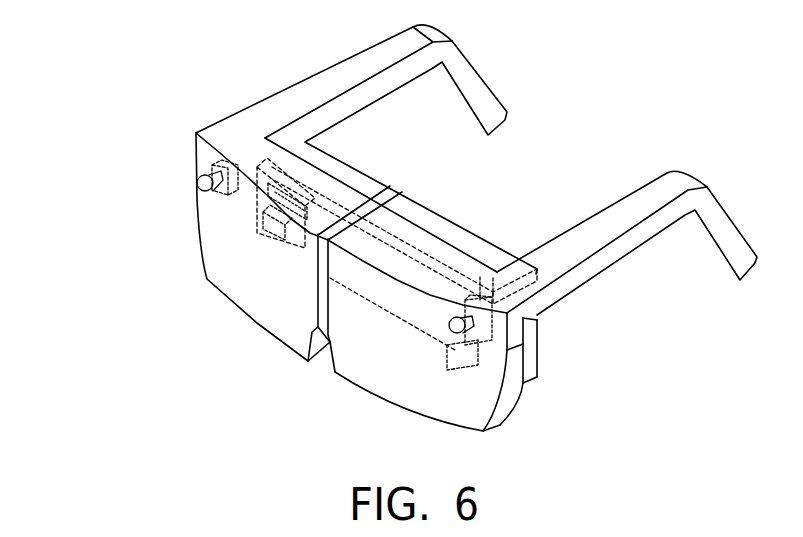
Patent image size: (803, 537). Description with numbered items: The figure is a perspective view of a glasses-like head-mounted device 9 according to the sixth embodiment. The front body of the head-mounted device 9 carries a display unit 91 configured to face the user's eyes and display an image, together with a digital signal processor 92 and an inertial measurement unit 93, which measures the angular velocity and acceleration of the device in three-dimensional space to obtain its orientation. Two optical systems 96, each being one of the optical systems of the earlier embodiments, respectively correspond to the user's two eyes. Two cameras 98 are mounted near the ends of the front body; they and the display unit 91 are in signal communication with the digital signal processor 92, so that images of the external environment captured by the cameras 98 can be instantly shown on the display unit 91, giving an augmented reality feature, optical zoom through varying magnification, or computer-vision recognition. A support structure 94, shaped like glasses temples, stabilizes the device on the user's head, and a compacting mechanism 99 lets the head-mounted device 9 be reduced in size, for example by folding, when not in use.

The head-mounted device 9 is at (35, 37).
The display unit 91 is at (463, 355).
The digital signal processor 92 is at (297, 237).
The inertial measurement unit 93 is at (273, 230).
The support structure 94 is at (608, 222).
The optical systems 96 is at (303, 148).
The cameras 98 is at (198, 188).
The compacting mechanism 99 is at (389, 186).